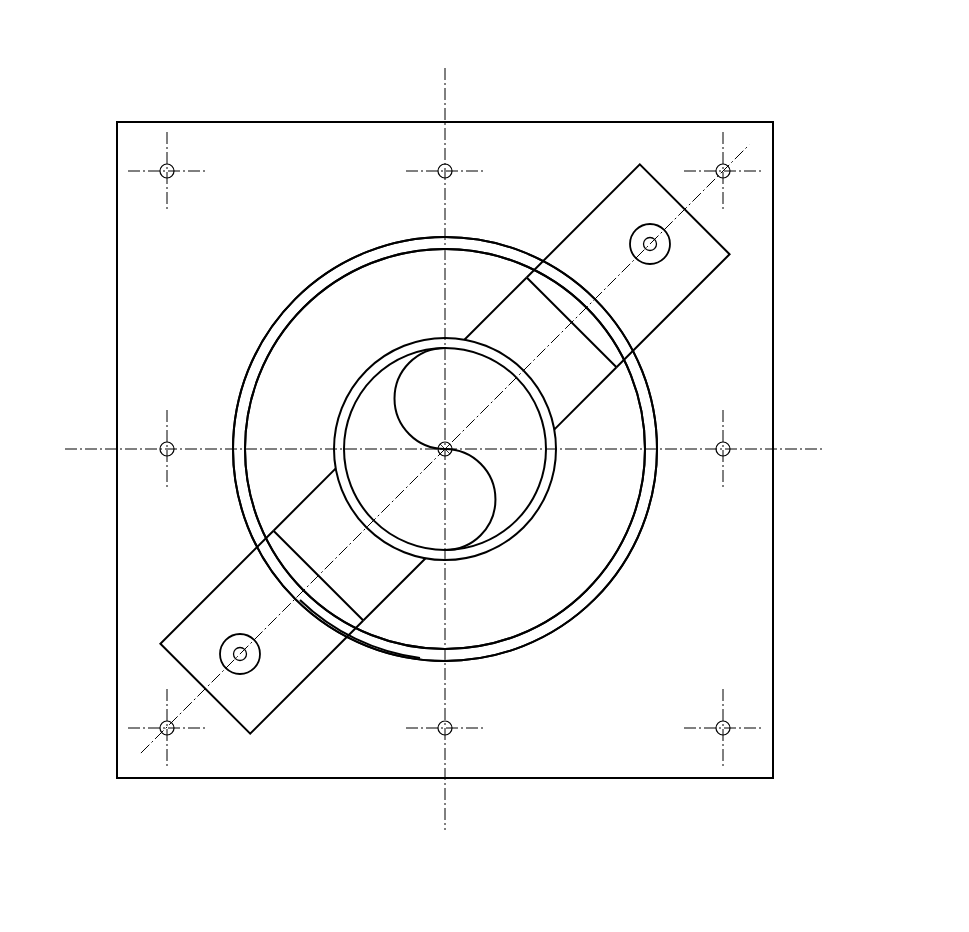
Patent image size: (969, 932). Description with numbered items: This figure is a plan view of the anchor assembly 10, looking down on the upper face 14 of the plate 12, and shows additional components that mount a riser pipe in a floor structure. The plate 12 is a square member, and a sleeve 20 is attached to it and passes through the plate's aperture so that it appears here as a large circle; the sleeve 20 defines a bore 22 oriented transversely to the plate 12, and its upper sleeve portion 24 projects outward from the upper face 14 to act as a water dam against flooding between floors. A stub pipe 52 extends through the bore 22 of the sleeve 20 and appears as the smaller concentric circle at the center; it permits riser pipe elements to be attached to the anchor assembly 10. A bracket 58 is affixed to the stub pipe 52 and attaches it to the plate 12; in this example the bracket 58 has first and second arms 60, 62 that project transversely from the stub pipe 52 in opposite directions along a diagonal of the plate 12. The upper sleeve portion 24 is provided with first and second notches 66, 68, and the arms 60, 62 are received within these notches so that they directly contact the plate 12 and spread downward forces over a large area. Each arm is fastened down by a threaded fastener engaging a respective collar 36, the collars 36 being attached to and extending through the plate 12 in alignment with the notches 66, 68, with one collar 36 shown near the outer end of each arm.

The anchor assembly 10 is at (772, 60).
The plate 12 is at (758, 557).
The upper face 14 is at (589, 723).
The sleeve 20 is at (604, 583).
The bore 22 is at (577, 530).
The upper sleeve portion 24 is at (338, 280).
The collar 36 is at (222, 647).
The stub pipe 52 is at (548, 420).
The bracket 58 is at (680, 268).
The first arm 60 is at (260, 578).
The second arm 62 is at (567, 267).
The first notch 66 is at (358, 645).
The second notch 68 is at (530, 267).